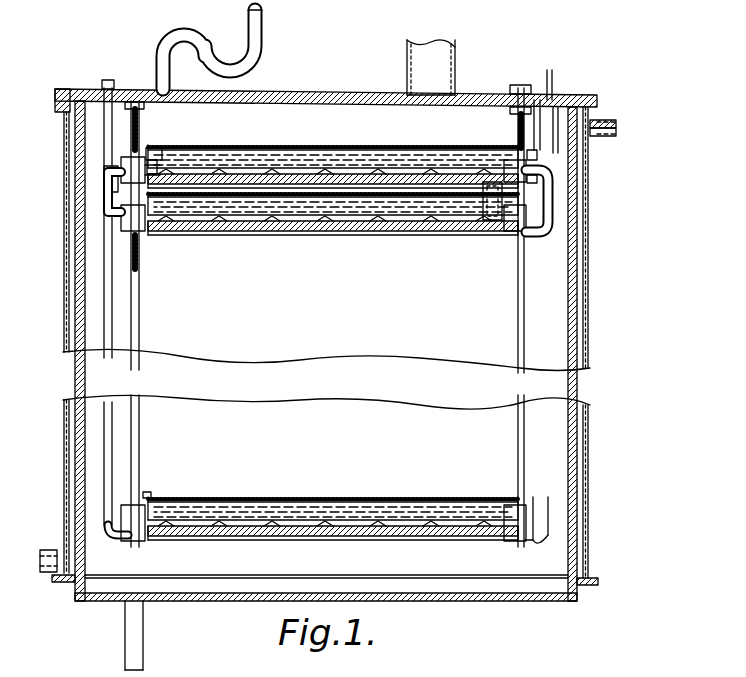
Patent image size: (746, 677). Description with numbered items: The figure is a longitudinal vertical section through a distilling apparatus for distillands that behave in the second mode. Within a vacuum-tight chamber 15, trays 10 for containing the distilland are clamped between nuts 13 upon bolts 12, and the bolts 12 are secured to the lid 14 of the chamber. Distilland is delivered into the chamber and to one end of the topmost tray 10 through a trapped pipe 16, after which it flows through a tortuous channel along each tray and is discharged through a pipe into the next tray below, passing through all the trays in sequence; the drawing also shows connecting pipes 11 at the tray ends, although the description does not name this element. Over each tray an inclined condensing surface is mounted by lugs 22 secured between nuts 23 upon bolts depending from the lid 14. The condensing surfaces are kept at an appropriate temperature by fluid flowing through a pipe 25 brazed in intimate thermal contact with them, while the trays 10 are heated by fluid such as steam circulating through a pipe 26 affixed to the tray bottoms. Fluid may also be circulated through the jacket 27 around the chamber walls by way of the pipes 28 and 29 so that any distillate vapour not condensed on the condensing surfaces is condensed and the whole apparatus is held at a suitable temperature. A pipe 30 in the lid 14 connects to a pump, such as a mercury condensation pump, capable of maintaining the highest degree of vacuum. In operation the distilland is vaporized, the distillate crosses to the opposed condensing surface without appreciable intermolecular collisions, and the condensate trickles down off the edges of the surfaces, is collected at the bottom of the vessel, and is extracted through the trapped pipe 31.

The trays 10 is at (492, 165).
The connecting pipes 11 is at (108, 176).
The bolts 12 is at (133, 305).
The nuts 13 is at (106, 196).
The lid 14 is at (86, 84).
The vacuum-tight chamber 15 is at (350, 117).
The trapped pipe 16 is at (208, 30).
The lugs 22 is at (150, 140).
The nuts 23 is at (185, 148).
The pipe 25 is at (108, 82).
The pipe 26 is at (543, 76).
The jacket 27 is at (572, 318).
The pipe 28 is at (600, 127).
The pipe 29 is at (48, 575).
The pipe 30 is at (446, 55).
The trapped pipe 31 is at (130, 622).